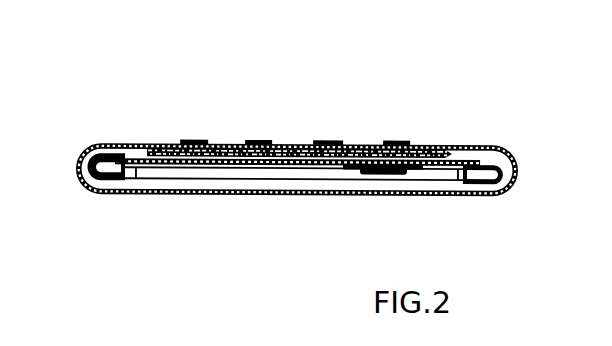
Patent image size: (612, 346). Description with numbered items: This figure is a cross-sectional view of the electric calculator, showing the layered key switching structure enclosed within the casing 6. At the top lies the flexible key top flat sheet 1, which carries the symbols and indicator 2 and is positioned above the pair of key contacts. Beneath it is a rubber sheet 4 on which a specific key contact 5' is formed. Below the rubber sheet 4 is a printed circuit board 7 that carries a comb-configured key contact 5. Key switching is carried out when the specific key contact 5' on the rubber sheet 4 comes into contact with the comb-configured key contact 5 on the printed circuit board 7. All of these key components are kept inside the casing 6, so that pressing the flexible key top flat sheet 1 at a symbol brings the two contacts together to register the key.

The flexible key top flat sheet 1 is at (492, 143).
The symbols and indicator 2 is at (193, 139).
The rubber sheet 4 is at (293, 142).
The comb-configured key contact 5 is at (390, 211).
The specific key contact 5' is at (432, 124).
The casing 6 is at (113, 190).
The printed circuit board 7 is at (258, 168).